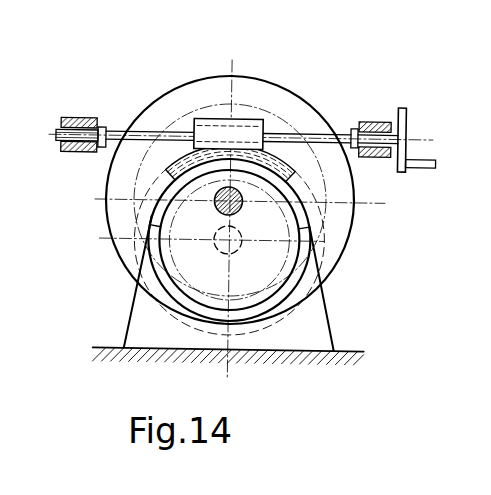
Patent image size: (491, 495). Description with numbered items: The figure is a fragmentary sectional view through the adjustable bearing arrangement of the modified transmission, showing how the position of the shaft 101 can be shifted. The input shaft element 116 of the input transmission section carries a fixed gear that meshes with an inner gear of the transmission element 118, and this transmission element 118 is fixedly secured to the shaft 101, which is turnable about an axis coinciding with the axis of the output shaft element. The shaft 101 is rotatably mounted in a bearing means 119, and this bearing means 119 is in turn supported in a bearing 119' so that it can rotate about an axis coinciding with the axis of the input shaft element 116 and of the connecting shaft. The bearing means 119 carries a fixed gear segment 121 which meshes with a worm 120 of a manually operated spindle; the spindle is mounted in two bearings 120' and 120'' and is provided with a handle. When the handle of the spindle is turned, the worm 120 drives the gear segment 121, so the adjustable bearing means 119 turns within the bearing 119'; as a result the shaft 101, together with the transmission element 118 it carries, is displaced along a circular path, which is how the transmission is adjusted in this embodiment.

The shaft 101 is at (302, 228).
The input shaft element 116 is at (238, 242).
The transmission element 118 is at (188, 92).
The bearing means 119 is at (176, 240).
The bearing 119' is at (194, 283).
The worm 120 is at (253, 96).
The bearing 120' is at (385, 107).
The bearing 120'' is at (63, 113).
The gear segment 121 is at (164, 168).